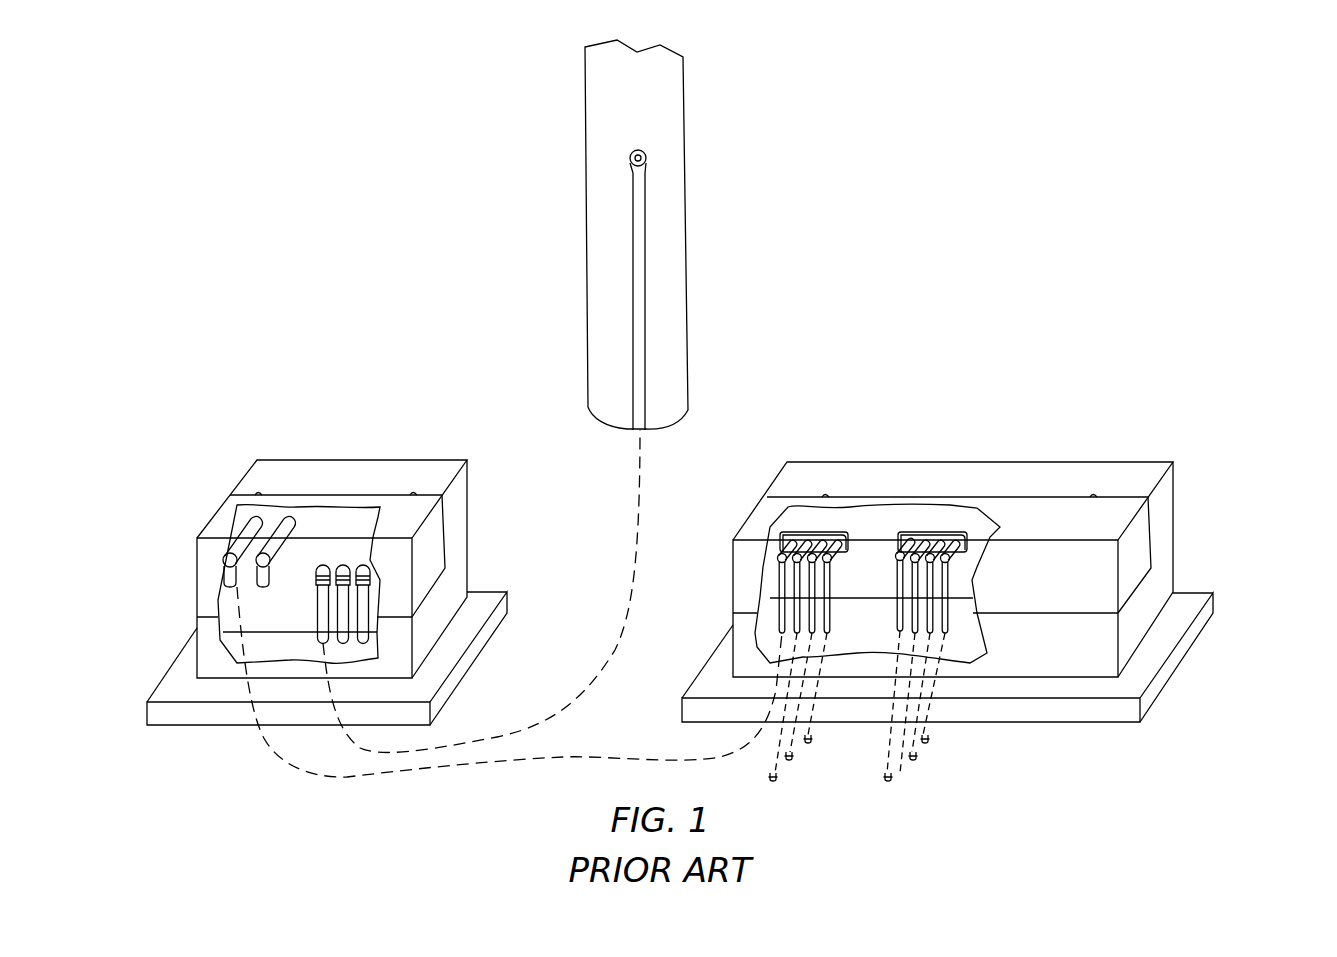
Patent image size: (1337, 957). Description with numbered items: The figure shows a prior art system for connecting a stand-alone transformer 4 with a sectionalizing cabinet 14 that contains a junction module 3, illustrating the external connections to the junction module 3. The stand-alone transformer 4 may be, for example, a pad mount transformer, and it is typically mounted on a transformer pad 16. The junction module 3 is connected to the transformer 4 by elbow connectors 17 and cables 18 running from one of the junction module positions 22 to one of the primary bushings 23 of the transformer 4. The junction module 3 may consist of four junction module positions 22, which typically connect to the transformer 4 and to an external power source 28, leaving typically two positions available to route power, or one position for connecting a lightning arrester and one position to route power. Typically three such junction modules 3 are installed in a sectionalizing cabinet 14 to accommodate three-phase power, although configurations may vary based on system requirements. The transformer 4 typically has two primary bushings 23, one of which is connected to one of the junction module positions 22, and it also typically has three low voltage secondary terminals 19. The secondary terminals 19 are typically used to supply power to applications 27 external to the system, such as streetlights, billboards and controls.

The stand-alone transformer 4 is at (282, 468).
The primary bushings 23 is at (230, 558).
The low voltage secondary terminals 19 is at (363, 583).
The transformer pad 16 is at (173, 676).
The applications 27 is at (677, 232).
The sectionalizing cabinet 14 is at (1103, 470).
The junction module 3 is at (831, 483).
The elbow connectors 17 is at (783, 560).
The junction module positions 22 is at (833, 537).
The cables 18 is at (827, 650).
The external power source 28 is at (812, 743).